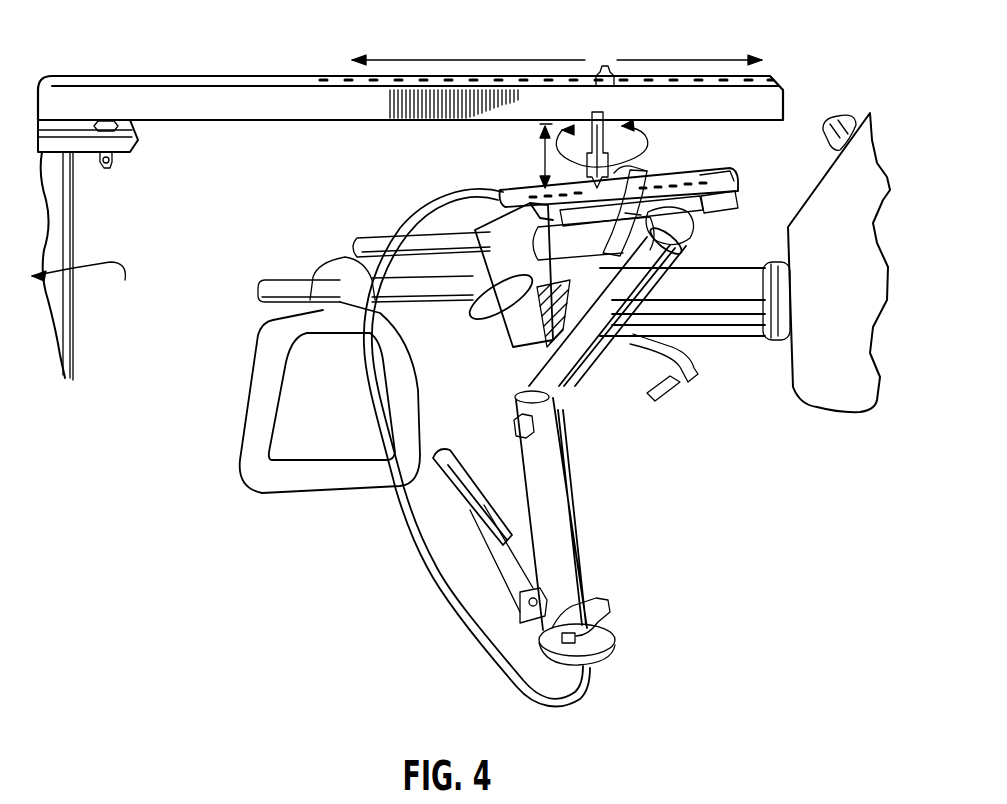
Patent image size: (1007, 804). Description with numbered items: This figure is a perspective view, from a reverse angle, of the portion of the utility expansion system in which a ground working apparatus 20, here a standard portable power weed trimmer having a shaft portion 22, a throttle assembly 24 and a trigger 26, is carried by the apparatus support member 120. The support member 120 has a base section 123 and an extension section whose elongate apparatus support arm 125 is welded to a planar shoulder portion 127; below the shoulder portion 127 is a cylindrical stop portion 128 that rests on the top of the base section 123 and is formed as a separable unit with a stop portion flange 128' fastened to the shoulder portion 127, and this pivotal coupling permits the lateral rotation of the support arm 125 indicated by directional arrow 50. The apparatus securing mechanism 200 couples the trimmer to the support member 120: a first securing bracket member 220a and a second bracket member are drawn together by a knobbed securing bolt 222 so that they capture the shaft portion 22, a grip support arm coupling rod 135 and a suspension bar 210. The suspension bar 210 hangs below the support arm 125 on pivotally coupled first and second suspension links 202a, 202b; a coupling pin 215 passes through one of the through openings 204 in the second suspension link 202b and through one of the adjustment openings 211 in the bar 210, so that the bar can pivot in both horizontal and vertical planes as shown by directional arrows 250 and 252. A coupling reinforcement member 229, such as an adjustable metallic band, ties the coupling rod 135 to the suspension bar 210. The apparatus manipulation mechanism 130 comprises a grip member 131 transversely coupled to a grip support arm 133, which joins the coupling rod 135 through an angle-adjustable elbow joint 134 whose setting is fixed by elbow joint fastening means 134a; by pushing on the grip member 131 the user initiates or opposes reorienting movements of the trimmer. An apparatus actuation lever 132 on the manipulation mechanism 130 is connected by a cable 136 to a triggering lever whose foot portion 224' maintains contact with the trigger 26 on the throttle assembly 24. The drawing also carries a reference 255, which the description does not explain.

The ground working apparatus 20 is at (820, 377).
The shaft portion 22 is at (345, 292).
The throttle assembly 24 is at (607, 311).
The trigger 26 is at (697, 380).
The directional arrow 50 is at (93, 270).
The apparatus support member 120 is at (242, 88).
The base section 123 is at (70, 302).
The apparatus support arm 125 is at (113, 103).
The shoulder portion 127 is at (75, 134).
The stop portion 128 is at (122, 266).
The stop portion flange 128' is at (120, 153).
The apparatus manipulation mechanism 130 is at (555, 481).
The grip member 131 is at (568, 517).
The apparatus actuation lever 132 is at (452, 492).
The grip support arm 133 is at (566, 400).
The angle-adjustable elbow joint 134 is at (680, 220).
The elbow joint fastening means 134a is at (735, 180).
The grip support arm coupling rod 135 is at (518, 328).
The cable 136 is at (458, 625).
The apparatus securing mechanism 200 is at (487, 233).
The first suspension link 202a is at (597, 112).
The second suspension link 202b is at (546, 125).
The through openings 204 is at (672, 285).
The suspension bar 210 is at (726, 200).
The adjustment openings 211 is at (702, 178).
The coupling pin 215 is at (672, 176).
The first securing bracket member 220a is at (436, 228).
The knobbed securing bolt 222 is at (483, 308).
The foot portion 224' is at (682, 406).
The coupling reinforcement member 229 is at (672, 240).
The directional arrow 250 is at (652, 140).
The directional arrow 252 is at (538, 154).
The travel arrow 255 is at (698, 58).